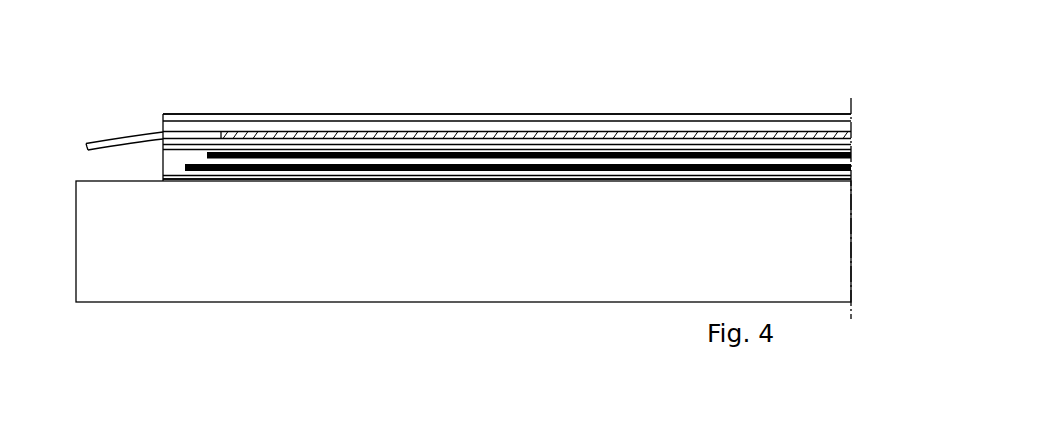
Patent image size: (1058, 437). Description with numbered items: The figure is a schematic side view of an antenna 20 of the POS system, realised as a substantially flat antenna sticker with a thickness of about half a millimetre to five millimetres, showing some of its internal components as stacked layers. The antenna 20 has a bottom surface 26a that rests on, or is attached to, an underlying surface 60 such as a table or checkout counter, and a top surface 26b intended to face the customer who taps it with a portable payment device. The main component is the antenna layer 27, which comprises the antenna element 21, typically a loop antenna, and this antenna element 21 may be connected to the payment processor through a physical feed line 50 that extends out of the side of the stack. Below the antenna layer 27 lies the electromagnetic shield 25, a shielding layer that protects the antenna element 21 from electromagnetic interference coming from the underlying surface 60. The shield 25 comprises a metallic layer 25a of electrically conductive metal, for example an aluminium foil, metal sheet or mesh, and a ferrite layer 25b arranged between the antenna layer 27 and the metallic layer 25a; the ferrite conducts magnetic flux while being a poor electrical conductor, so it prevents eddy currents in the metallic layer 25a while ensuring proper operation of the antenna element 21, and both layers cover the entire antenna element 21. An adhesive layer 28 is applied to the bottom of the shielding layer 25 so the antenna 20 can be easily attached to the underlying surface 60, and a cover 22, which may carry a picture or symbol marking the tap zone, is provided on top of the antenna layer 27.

The antenna 20 is at (698, 65).
The antenna element 21 is at (517, 129).
The cover 22 is at (862, 119).
The electromagnetic shield 25 is at (862, 161).
The metallic layer 25a is at (303, 173).
The ferrite layer 25b is at (388, 161).
The bottom surface 26a is at (502, 184).
The top surface 26b is at (358, 112).
The antenna layer 27 is at (862, 135).
The adhesive layer 28 is at (862, 177).
The physical feed line 50 is at (142, 129).
The underlying surface 60 is at (134, 184).